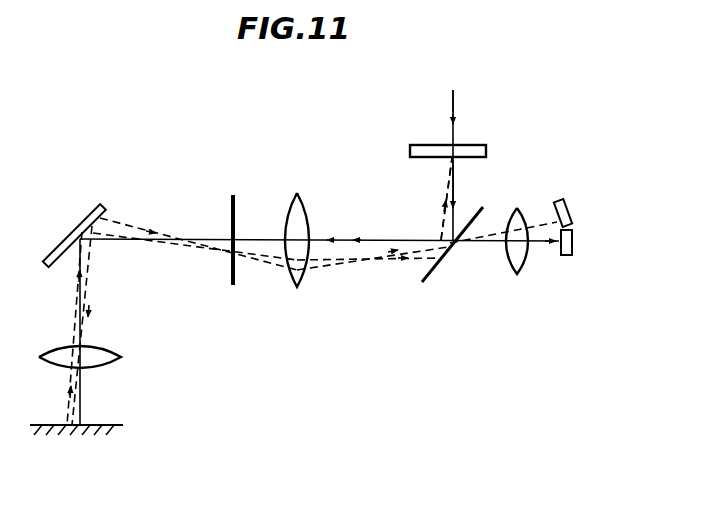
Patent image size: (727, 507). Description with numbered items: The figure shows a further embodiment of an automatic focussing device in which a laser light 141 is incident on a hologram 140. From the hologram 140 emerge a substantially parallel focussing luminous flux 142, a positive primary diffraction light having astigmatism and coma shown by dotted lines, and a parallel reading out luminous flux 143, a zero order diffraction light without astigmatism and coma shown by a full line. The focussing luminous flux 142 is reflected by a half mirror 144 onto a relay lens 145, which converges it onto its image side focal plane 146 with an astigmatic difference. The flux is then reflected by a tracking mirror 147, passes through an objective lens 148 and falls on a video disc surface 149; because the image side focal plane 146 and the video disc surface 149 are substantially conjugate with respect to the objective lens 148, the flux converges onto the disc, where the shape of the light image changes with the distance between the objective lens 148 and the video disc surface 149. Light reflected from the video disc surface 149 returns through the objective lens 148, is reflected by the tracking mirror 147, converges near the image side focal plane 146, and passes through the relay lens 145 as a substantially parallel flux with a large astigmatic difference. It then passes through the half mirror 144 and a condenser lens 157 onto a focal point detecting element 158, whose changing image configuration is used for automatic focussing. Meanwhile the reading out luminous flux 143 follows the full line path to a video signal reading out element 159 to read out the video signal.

The hologram 140 is at (424, 151).
The laser light 141 is at (450, 112).
The focussing luminous flux 142 is at (442, 212).
The reading out luminous flux 143 is at (456, 189).
The half mirror 144 is at (444, 258).
The relay lens 145 is at (292, 281).
The image side focal plane 146 is at (233, 207).
The tracking mirror 147 is at (84, 215).
The objective lens 148 is at (117, 354).
The video disc surface 149 is at (108, 425).
The condenser lens 157 is at (526, 258).
The focal point detecting element 158 is at (568, 218).
The video signal reading out element 159 is at (573, 249).